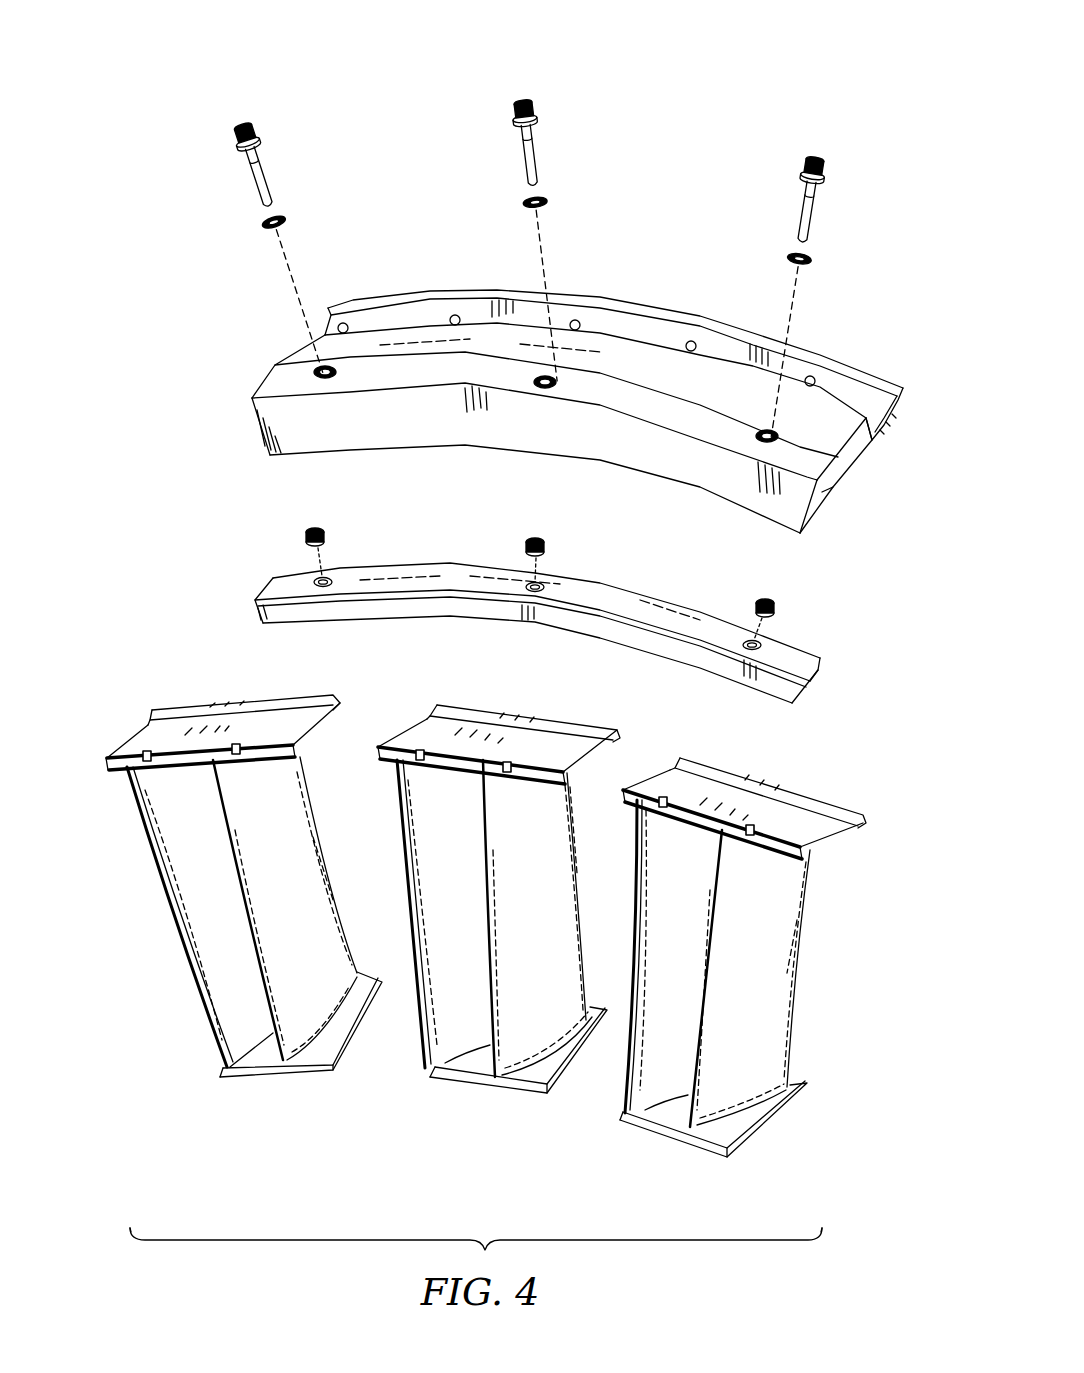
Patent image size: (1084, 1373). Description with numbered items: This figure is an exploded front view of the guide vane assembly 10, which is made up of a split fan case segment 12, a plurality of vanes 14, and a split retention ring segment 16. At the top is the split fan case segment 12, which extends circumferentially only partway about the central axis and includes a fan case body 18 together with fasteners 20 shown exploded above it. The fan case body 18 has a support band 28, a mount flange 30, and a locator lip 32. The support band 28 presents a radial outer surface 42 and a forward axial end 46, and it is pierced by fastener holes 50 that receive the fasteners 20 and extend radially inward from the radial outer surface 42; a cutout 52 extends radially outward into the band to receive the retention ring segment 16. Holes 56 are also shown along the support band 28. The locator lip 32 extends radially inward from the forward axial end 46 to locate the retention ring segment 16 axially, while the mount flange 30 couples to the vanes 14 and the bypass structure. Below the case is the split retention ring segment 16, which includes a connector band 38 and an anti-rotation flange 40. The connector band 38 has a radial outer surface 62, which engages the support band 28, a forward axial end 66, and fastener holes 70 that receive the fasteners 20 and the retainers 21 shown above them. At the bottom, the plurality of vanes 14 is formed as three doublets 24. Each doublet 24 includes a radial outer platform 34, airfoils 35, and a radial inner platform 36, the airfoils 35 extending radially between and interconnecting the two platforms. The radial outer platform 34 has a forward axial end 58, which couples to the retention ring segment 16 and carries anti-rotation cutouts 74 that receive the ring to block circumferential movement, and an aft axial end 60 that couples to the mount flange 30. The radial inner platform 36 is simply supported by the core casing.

The guide vane assembly 10 is at (154, 67).
The split fan case segment 12 is at (888, 325).
The plurality of vanes 14 is at (116, 978).
The split retention ring segment 16 is at (835, 708).
The fan case body 18 is at (240, 362).
The fasteners 20 is at (262, 150).
The retainers 21 is at (305, 535).
The doublet 24 is at (124, 843).
The support band 28 is at (303, 340).
The mount flange 30 is at (893, 412).
The locator lip 32 is at (805, 530).
The radial outer platform 34 is at (123, 732).
The airfoils 35 is at (770, 945).
The radial inner platform 36 is at (280, 1095).
The connector band 38 is at (790, 708).
The anti-rotation flange 40 is at (823, 660).
The radial outer surface 42 is at (847, 438).
The forward axial end 46 is at (385, 432).
The fastener holes 50 is at (325, 380).
The cutout 52 is at (822, 500).
The flange holes 56 is at (343, 322).
The forward axial end 58 is at (105, 766).
The aft axial end 60 is at (210, 702).
The radial outer surface 62 is at (403, 580).
The forward axial end 66 is at (400, 612).
The fastener holes 70 is at (323, 590).
The anti-rotation cutouts 74 is at (147, 765).